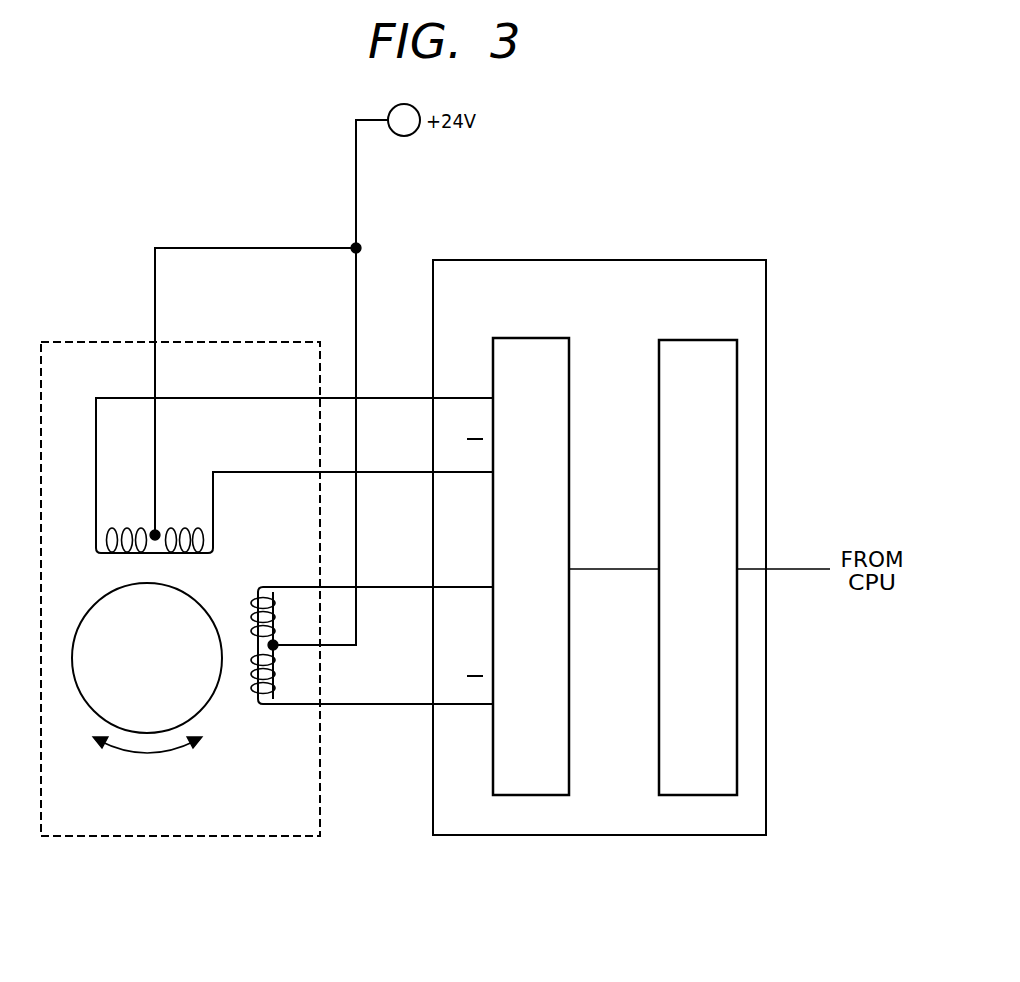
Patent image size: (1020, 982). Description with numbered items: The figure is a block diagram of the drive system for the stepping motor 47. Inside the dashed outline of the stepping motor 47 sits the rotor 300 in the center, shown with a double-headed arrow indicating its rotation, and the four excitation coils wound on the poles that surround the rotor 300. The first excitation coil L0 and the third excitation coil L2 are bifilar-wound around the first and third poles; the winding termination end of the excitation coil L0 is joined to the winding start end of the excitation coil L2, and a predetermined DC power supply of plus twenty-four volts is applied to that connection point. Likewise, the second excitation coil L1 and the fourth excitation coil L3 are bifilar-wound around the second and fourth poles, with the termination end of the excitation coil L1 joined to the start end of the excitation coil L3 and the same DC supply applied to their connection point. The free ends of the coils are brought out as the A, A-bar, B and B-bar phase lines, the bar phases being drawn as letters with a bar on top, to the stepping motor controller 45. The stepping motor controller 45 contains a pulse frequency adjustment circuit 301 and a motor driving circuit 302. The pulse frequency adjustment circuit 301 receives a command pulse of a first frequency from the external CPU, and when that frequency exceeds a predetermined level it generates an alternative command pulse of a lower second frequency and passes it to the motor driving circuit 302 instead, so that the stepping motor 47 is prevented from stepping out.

The stepping motor controller 45 is at (598, 258).
The stepping motor 47 is at (187, 341).
The rotor 300 is at (185, 591).
The pulse frequency adjustment circuit 301 is at (672, 338).
The motor driving circuit 302 is at (572, 353).
The first excitation coil L0 is at (114, 528).
The second excitation coil L1 is at (295, 613).
The third excitation coil L2 is at (173, 528).
The fourth excitation coil L3 is at (295, 680).